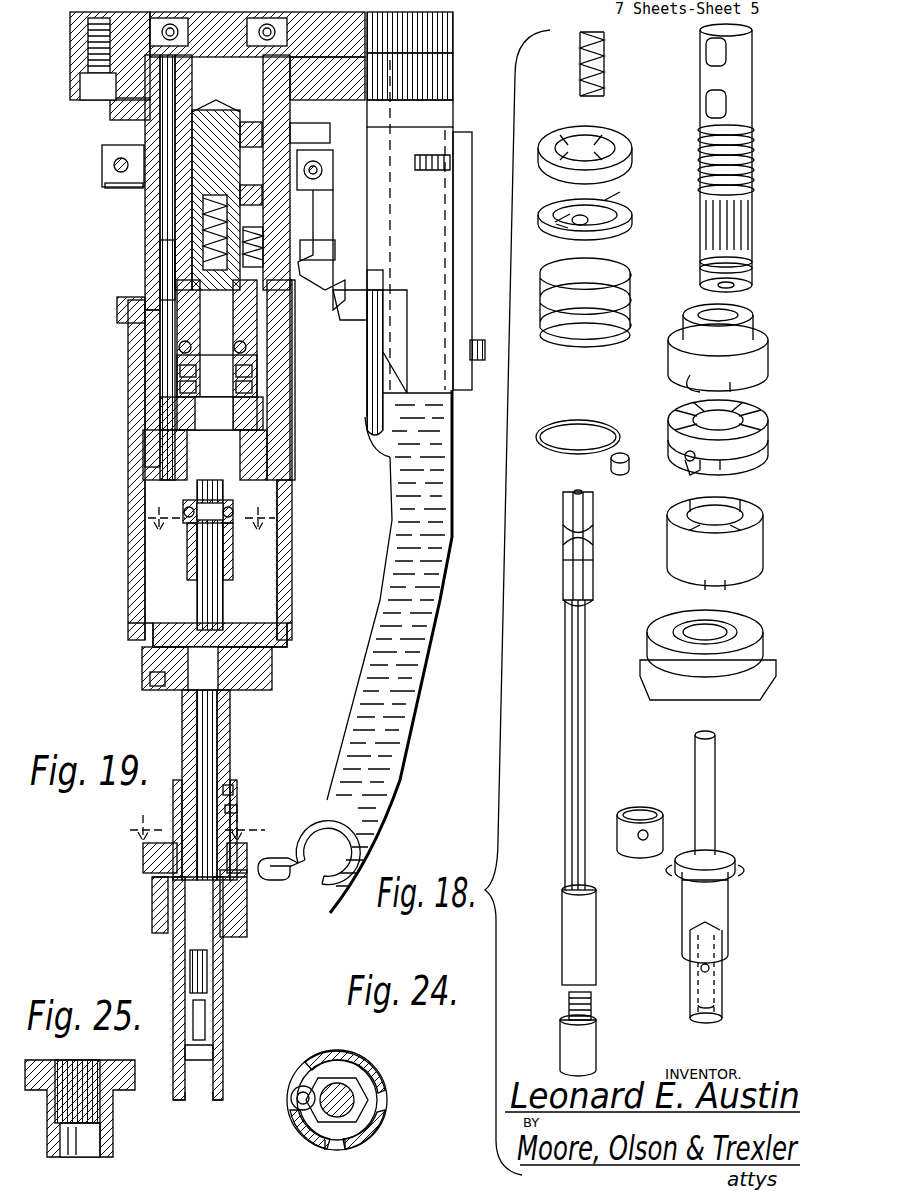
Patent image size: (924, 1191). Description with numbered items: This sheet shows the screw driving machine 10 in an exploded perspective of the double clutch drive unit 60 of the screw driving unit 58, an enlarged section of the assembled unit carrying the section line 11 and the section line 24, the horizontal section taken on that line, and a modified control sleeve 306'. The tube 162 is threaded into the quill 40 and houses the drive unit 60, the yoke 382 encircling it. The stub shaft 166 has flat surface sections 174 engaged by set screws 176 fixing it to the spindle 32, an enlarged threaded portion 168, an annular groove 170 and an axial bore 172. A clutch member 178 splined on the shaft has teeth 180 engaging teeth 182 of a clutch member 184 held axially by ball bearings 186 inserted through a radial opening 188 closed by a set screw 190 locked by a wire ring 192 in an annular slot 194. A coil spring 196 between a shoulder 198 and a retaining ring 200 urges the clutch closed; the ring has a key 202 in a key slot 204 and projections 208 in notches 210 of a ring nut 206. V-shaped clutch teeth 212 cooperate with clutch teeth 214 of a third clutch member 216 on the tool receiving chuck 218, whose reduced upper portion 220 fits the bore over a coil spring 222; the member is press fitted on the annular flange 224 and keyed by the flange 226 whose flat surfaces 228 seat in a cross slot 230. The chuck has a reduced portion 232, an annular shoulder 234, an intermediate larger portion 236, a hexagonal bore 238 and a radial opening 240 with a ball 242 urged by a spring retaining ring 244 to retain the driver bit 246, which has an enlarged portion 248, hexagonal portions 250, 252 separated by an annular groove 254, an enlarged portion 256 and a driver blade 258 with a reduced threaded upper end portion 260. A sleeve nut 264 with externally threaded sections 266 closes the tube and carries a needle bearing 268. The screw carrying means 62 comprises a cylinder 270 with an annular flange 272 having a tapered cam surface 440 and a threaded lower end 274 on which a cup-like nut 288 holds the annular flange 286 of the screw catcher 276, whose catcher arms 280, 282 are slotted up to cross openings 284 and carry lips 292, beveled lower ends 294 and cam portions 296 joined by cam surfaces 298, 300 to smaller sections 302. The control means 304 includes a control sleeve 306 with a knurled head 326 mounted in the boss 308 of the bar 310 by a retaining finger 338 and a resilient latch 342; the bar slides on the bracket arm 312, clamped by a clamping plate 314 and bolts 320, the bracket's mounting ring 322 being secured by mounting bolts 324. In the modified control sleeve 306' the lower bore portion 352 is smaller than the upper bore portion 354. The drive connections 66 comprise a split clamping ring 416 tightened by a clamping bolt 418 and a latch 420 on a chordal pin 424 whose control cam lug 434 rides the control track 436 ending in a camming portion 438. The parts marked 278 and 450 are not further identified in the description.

In FIG. 19, the power tool 10 is at (355, 55).
In FIG. 19, the section line 11 is at (197, 816).
In FIG. 19, the section line 24— 24 is at (211, 506).
In FIG. 19, the spindle 32 is at (114, 165).
In FIG. 19, the quill 40 is at (120, 100).
In FIG. 19, the screw driving unit 58 is at (128, 216).
In FIG. 19, the drive unit 60 is at (160, 297).
In FIG. 19, the screw carrying means 62 is at (116, 550).
In FIG. 19, the reciprocating and drive connections 66 is at (346, 242).
In FIG. 19, the tube 162 is at (165, 230).
In FIG. 18, the stub shaft 166 is at (744, 80).
In FIG. 18, the enlarged threaded portion 168 is at (750, 170).
In FIG. 18, the annular groove 170 is at (745, 265).
In FIG. 18, the axial bore 172 is at (752, 286).
In FIG. 18, the flat surface sections 174 is at (708, 104).
In FIG. 19, the set screws 176 is at (293, 140).
In FIG. 19, the clutch member 178 is at (177, 330).
In FIG. 18, the clutch member 178 is at (768, 362).
In FIG. 18, the teeth 180 is at (715, 378).
In FIG. 18, the teeth 182 is at (746, 405).
In FIG. 19, the clutch member 184 is at (150, 350).
In FIG. 18, the clutch member 184 is at (756, 428).
In FIG. 19, the ball bearings 186 is at (295, 390).
In FIG. 18, the radial opening 188 is at (730, 468).
In FIG. 18, the set screw 190 is at (625, 455).
In FIG. 18, the wire ring 192 is at (578, 420).
In FIG. 18, the annular slot 194 is at (688, 458).
In FIG. 18, the coil spring 196 is at (545, 320).
In FIG. 18, the shoulder 198 is at (753, 340).
In FIG. 18, the retaining ring 200 is at (630, 216).
In FIG. 18, the key 202 is at (582, 214).
In FIG. 18, the key slot 204 is at (748, 130).
In FIG. 18, the ring nut 206 is at (630, 145).
In FIG. 18, the projections 208 is at (615, 196).
In FIG. 18, the notches 210 is at (553, 128).
In FIG. 18, the V-shaped clutch teeth 212 is at (690, 476).
In FIG. 19, the clutch teeth 214 is at (183, 392).
In FIG. 18, the clutch teeth 214 is at (700, 505).
In FIG. 19, the third clutch member 216 is at (250, 420).
In FIG. 18, the third clutch member 216 is at (755, 545).
In FIG. 19, the tool receiving chuck 218 is at (181, 575).
In FIG. 24, the tool receiving chuck 218 is at (380, 1100).
In FIG. 18, the tool receiving chuck 218 is at (746, 868).
In FIG. 18, the reduced upper portion 220 is at (712, 778).
In FIG. 19, the coil spring 222 is at (205, 232).
In FIG. 18, the coil spring 222 is at (603, 50).
In FIG. 18, the annular flange 224 is at (718, 851).
In FIG. 18, the flange 226 is at (690, 885).
In FIG. 18, the flat surfaces 228 is at (672, 865).
In FIG. 18, the cross slot 230 is at (727, 572).
In FIG. 18, the reduced portion 232 is at (688, 985).
In FIG. 18, the annular shoulder 234 is at (724, 952).
In FIG. 18, the intermediate larger portion 236 is at (690, 918).
In FIG. 18, the hexagonal bore 238 is at (708, 1017).
In FIG. 24, the radial opening 240 is at (295, 1090).
In FIG. 18, the radial opening 240 is at (710, 968).
In FIG. 19, the ball 242 is at (190, 520).
In FIG. 24, the ball 242 is at (296, 1108).
In FIG. 18, the ball 242 is at (632, 806).
In FIG. 19, the spring retaining ring 244 is at (245, 520).
In FIG. 24, the spring retaining ring 244 is at (375, 1080).
In FIG. 19, the driver bit 246 is at (225, 597).
In FIG. 24, the driver bit 246 is at (368, 1120).
In FIG. 18, the driver bit 246 is at (558, 745).
In FIG. 18, the enlarged portion 248 is at (565, 905).
In FIG. 18, the hexagonal portion 250 is at (568, 498).
In FIG. 18, the hexagonal portion 252 is at (593, 565).
In FIG. 18, the annular groove 254 is at (563, 535).
In FIG. 18, the enlarged portion 256 is at (568, 605).
In FIG. 18, the driver blade 258 is at (580, 1050).
In FIG. 18, the reduced threaded upper end portion 260 is at (592, 1015).
In FIG. 19, the sleeve nut 264 is at (150, 455).
In FIG. 18, the sleeve nut 264 is at (680, 682).
In FIG. 18, the externally threaded sections 266 is at (650, 650).
In FIG. 19, the needle bearing 268 is at (190, 425).
In FIG. 18, the needle bearing 268 is at (685, 618).
In FIG. 19, the cylinder 270 is at (277, 565).
In FIG. 19, the annular flange 272 is at (118, 310).
In FIG. 19, the threaded lower end 274 is at (240, 640).
In FIG. 19, the screw catcher 276 is at (241, 758).
In FIG. 19, the sleeve 278 is at (185, 697).
In FIG. 19, the catcher arm 280 is at (173, 965).
In FIG. 19, the catcher arm 282 is at (225, 970).
In FIG. 19, the cross openings 284 is at (230, 700).
In FIG. 19, the annular flange 286 is at (160, 682).
In FIG. 19, the cup-like nut 288 is at (250, 673).
In FIG. 19, the lips 292 is at (222, 1094).
In FIG. 19, the beveled lower ends 294 is at (220, 1072).
In FIG. 19, the cam portions 296 is at (240, 797).
In FIG. 19, the cam surface 298 is at (242, 812).
In FIG. 19, the cam surface 300 is at (228, 792).
In FIG. 19, the sections 302 is at (183, 720).
In FIG. 19, the control means 304 is at (134, 883).
In FIG. 19, the control sleeve 306 is at (121, 905).
In FIG. 25, the modified control sleeve 306' is at (100, 1110).
In FIG. 19, the boss 308 is at (165, 922).
In FIG. 19, the bar 310 is at (385, 755).
In FIG. 19, the bracket arm 312 is at (420, 388).
In FIG. 19, the clamping plate 314 is at (465, 135).
In FIG. 19, the bolts 320 is at (478, 362).
In FIG. 19, the mounting ring 322 is at (78, 66).
In FIG. 19, the mounting bolts 324 is at (96, 96).
In FIG. 19, the knurled head 326 is at (145, 845).
In FIG. 19, the retaining finger 338 is at (282, 884).
In FIG. 19, the resilient latch 342 is at (341, 818).
In FIG. 25, the lower bore portion 352 is at (62, 1140).
In FIG. 25, the upper bore portion 354 is at (62, 1085).
In FIG. 19, the yoke 382 is at (257, 135).
In FIG. 19, the split clamping ring 416 is at (102, 180).
In FIG. 19, the clamping bolt 418 is at (125, 188).
In FIG. 19, the latch 420 is at (333, 252).
In FIG. 19, the chordal pin 424 is at (320, 170).
In FIG. 19, the control cam lug 434 is at (383, 280).
In FIG. 19, the control track 436 is at (365, 430).
In FIG. 19, the camming portion 438 is at (378, 452).
In FIG. 19, the tapered cam surface 440 is at (367, 300).
In FIG. 19, the tube section 450 is at (148, 257).